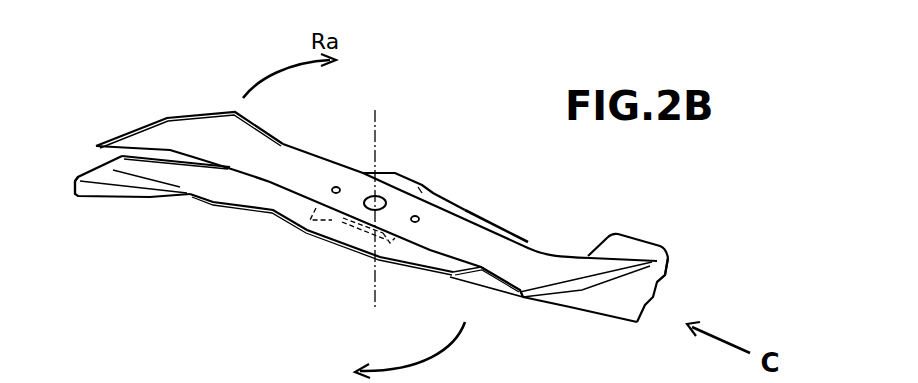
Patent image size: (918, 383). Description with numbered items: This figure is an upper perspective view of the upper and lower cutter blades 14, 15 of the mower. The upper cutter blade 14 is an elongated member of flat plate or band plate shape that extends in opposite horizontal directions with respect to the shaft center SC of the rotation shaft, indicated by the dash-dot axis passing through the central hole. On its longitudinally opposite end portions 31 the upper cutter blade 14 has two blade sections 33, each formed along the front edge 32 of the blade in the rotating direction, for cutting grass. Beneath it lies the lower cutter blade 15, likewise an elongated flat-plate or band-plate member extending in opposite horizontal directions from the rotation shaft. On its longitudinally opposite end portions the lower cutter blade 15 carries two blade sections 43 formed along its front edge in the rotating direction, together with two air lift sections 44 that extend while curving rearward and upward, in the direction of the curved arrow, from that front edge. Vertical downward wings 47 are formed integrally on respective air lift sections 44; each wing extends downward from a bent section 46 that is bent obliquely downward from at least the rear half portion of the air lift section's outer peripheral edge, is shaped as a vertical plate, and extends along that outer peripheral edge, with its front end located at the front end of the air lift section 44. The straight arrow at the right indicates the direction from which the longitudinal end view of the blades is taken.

The upper cutter blade 14 is at (465, 212).
The lower cutter blade 15 is at (207, 207).
The longitudinally opposite end portions 31 is at (205, 132).
The front edge 32 is at (293, 145).
The blade sections 33 is at (153, 120).
The blade sections 43 is at (177, 165).
The air lift sections 44 is at (630, 248).
The bent section 46 is at (97, 173).
The vertical downward wings 47 is at (88, 188).
The shaft center SC is at (375, 125).